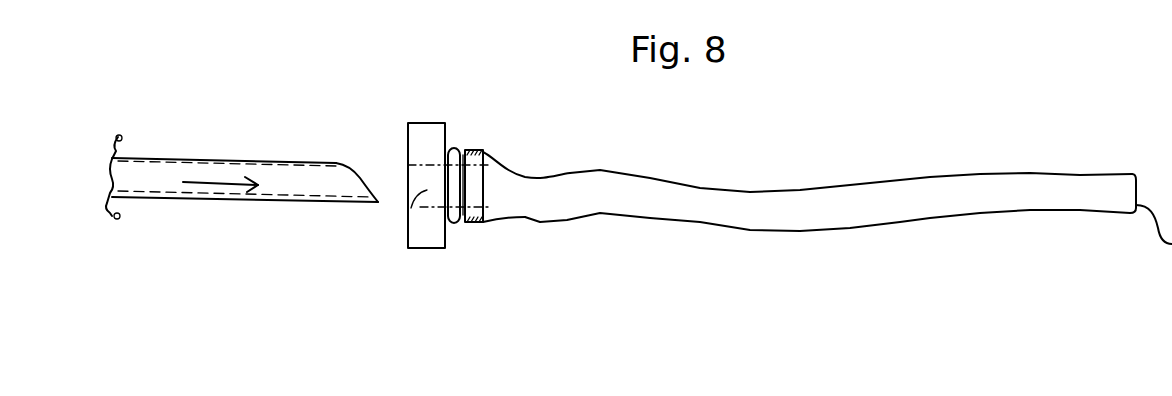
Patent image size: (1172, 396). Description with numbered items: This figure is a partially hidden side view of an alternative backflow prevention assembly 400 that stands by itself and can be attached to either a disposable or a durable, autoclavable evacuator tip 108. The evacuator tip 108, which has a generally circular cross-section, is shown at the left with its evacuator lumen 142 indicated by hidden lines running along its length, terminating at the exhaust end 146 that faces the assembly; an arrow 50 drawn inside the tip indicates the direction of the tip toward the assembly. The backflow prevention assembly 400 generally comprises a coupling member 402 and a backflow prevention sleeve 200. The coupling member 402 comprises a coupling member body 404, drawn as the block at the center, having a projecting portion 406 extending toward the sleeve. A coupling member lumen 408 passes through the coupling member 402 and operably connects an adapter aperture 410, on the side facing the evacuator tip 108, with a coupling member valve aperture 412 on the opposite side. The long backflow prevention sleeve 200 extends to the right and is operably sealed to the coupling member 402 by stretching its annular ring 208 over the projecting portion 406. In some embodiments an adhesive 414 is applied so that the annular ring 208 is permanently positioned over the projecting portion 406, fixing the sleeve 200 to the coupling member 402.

The direction of blade insertion 50 is at (220, 176).
The evacuator tip 108 is at (150, 202).
The evacuator lumen 142 is at (140, 177).
The exhaust end 146 is at (347, 170).
The backflow prevention sleeve 200 is at (700, 223).
The annular ring 208 is at (452, 222).
The backflow prevention assembly 400 is at (477, 174).
The coupling member 402 is at (418, 250).
The coupling member body 404 is at (422, 123).
The projecting portion 406 is at (487, 153).
The coupling member lumen 408 is at (410, 184).
The adapter aperture 410 is at (402, 197).
The coupling member valve aperture 412 is at (490, 185).
The adhesive 414 is at (470, 225).